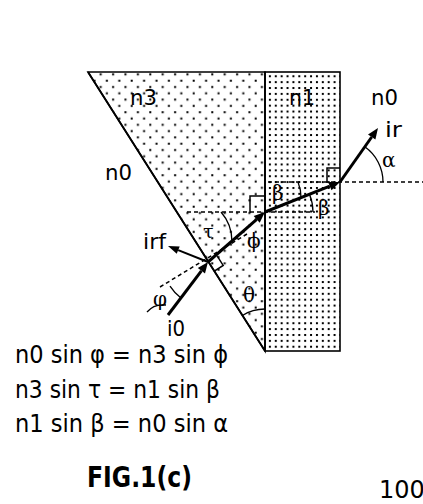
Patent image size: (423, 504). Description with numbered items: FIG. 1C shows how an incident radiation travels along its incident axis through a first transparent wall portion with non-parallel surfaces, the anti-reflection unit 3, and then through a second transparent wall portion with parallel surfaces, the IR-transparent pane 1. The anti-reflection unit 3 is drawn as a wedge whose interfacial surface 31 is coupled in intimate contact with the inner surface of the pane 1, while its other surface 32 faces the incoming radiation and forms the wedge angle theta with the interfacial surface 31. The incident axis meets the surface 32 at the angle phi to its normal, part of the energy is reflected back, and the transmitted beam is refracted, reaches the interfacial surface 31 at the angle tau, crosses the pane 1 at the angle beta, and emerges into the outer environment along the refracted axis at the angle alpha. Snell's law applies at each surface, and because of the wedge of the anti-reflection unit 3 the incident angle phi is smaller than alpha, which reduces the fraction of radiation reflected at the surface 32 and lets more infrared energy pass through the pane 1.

The IR-transparent pane 1 is at (300, 72).
The anti-reflection unit 3 is at (144, 72).
The interfacial surface 31 is at (265, 106).
The surface of the anti-reflection unit 32 is at (103, 96).